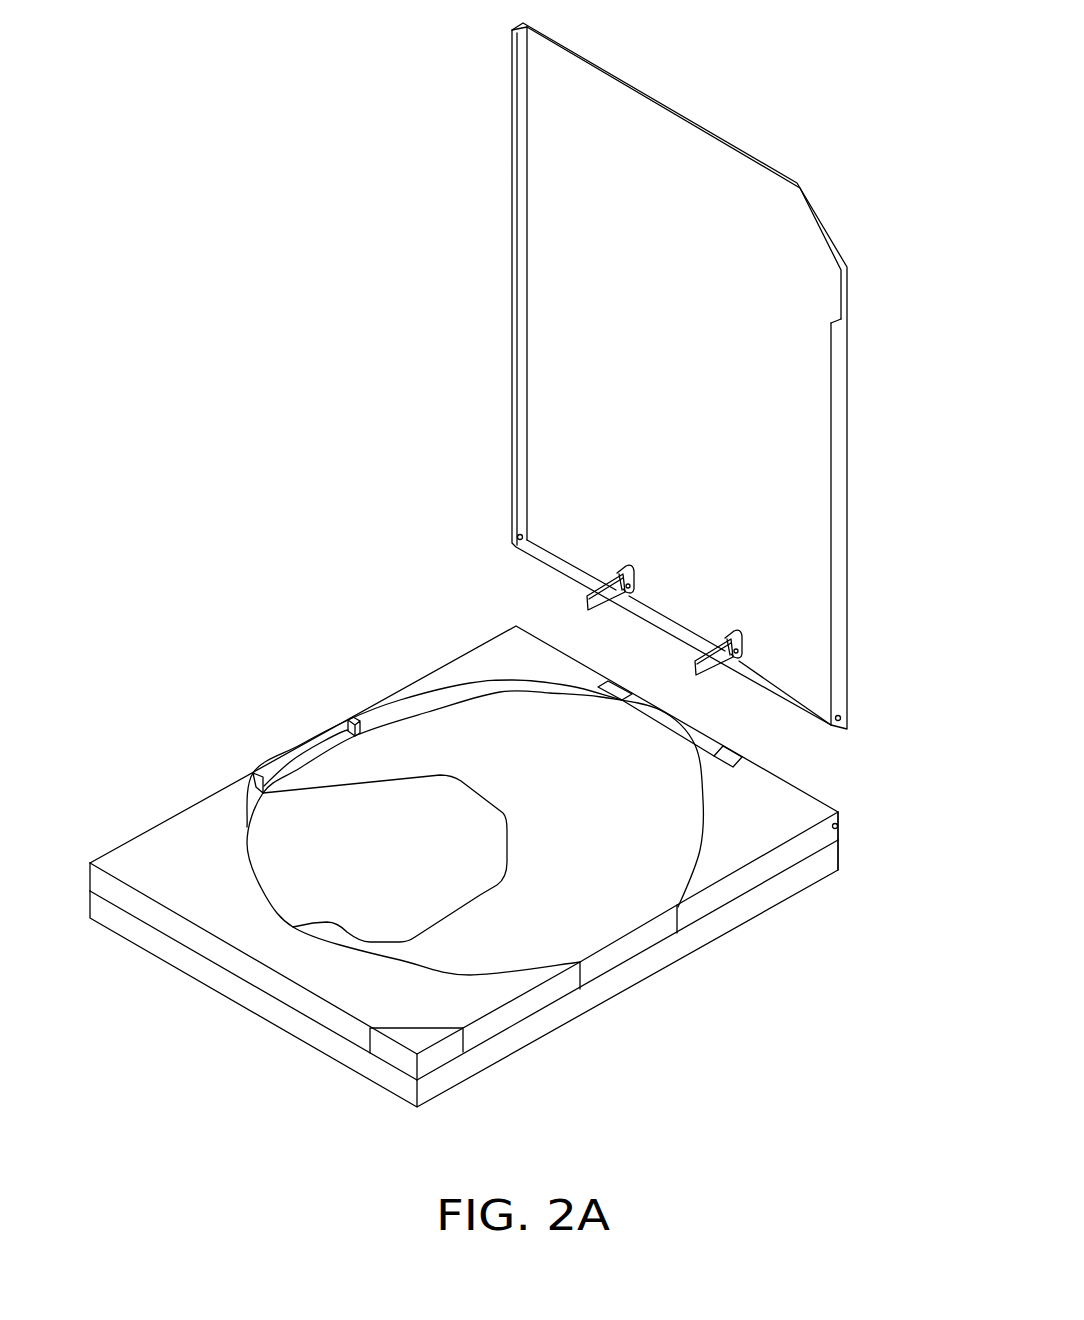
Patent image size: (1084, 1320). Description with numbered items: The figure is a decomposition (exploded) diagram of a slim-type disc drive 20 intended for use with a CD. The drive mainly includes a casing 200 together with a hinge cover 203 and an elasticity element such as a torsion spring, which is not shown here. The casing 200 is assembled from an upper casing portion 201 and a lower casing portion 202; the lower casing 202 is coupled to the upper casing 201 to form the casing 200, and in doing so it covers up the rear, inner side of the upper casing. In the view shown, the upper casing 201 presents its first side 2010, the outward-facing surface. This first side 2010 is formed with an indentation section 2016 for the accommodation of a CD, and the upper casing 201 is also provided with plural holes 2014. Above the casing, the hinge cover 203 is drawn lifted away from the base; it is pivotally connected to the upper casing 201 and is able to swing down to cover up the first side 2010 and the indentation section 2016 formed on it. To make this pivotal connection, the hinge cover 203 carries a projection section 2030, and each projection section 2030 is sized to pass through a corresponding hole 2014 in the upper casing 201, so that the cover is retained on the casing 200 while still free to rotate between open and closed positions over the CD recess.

The slim-type disc drive 20 is at (501, 862).
The casing 200 is at (912, 856).
The upper casing portion 201 is at (715, 895).
The lower casing portion 202 is at (637, 970).
The hinge cover 203 is at (834, 466).
The first side 2010 is at (510, 645).
The holes 2014 is at (622, 689).
The indentation section 2016 is at (428, 727).
The projection section 2030 is at (590, 591).